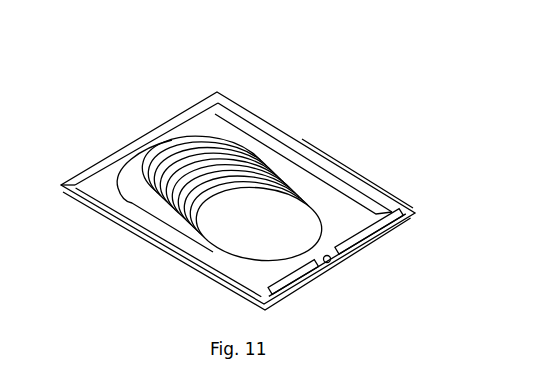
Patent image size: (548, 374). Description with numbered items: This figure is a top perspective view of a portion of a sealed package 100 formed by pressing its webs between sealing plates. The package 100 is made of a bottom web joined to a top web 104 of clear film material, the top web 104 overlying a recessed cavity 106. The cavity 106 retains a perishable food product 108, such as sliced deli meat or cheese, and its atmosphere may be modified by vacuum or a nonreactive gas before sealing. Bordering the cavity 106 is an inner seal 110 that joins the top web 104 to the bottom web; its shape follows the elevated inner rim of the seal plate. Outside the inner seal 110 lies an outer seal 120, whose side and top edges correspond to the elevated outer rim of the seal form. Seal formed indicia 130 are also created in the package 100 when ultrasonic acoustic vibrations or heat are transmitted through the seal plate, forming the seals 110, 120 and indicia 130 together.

The package 100 is at (239, 81).
The top web 104 is at (421, 218).
The sealed cavity 106 is at (141, 212).
The perishable food product 108 is at (237, 235).
The inner seal 110 is at (98, 178).
The outer seal 120 is at (361, 266).
The seal formed indicia 130 is at (323, 152).